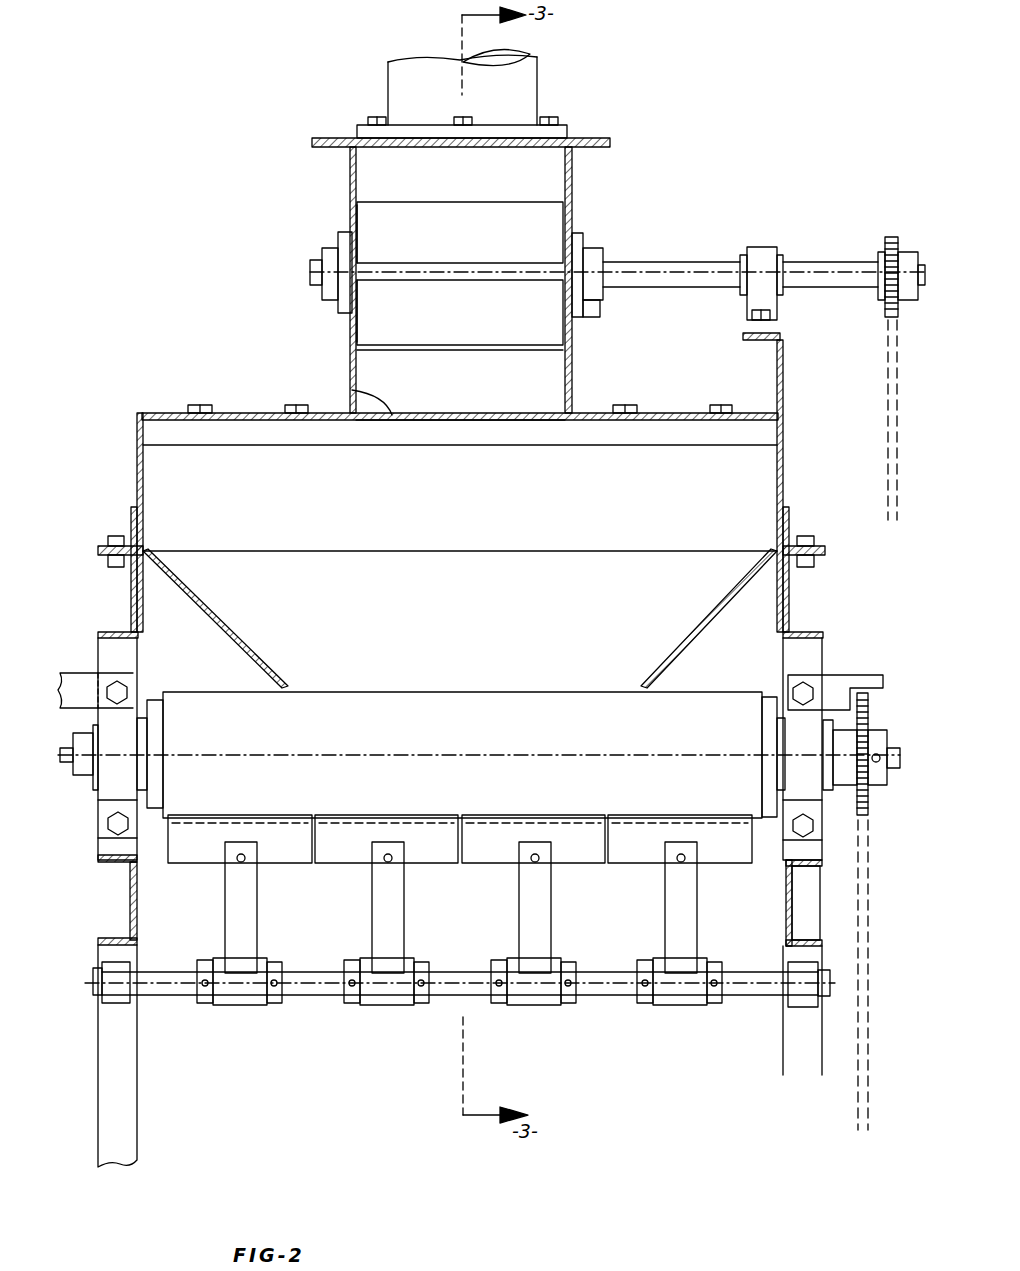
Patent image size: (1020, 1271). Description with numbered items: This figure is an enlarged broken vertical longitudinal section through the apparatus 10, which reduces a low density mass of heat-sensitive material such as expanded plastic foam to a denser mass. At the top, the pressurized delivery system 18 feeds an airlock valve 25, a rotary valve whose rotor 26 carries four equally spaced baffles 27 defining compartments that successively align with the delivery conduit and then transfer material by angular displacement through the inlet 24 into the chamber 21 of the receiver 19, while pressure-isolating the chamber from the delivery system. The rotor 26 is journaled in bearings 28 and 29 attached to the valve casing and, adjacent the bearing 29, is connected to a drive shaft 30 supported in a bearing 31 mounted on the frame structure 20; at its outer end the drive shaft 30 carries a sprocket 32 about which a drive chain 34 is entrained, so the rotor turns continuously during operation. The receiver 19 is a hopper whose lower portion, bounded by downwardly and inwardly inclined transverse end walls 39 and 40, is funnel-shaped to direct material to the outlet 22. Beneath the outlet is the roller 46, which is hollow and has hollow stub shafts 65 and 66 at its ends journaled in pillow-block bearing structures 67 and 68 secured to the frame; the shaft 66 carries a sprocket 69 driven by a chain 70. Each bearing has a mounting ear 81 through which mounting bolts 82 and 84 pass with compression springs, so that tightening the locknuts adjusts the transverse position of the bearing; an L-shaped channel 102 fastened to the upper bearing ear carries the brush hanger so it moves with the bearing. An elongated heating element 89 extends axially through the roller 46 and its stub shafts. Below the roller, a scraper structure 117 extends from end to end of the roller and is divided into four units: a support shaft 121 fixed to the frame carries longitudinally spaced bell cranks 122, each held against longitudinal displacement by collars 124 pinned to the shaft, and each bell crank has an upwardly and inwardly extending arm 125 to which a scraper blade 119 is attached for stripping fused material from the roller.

The apparatus 10 is at (158, 390).
The pressurized delivery system 18 is at (388, 76).
The receiver 19 is at (137, 472).
The frame structure 20 is at (98, 1082).
The chamber 21 is at (140, 506).
The outlet 22 is at (284, 690).
The inlet 24 is at (352, 390).
The airlock valve 25 is at (572, 190).
The rotor 26 is at (540, 268).
The baffles 27 is at (352, 218).
The bearing 28 is at (325, 252).
The bearing 29 is at (585, 317).
The drive shaft 30 is at (658, 268).
The bearing 31 is at (757, 248).
The sprocket 32 is at (888, 240).
The drive chain 34 is at (888, 358).
The transverse end wall 39 is at (218, 628).
The transverse end wall 40 is at (680, 645).
The roller 46 is at (390, 700).
The hollow stub shaft 65 is at (86, 776).
The hollow stub shaft 66 is at (872, 740).
The bearing structure 67 is at (112, 728).
The bearing structure 68 is at (818, 712).
The sprocket 69 is at (864, 806).
The chain 70 is at (868, 926).
The mounting ear 81 is at (106, 856).
The mounting bolt 82 is at (125, 684).
The mounting bolt 84 is at (108, 825).
The heating element 89 is at (64, 753).
The L-shaped channel 102 is at (72, 672).
The scraper structure 117 is at (230, 1008).
The scraper blade 119 is at (284, 862).
The support shaft 121 is at (160, 1000).
The bell crank 122 is at (240, 1006).
The collar 124 is at (205, 960).
The arm 125 is at (225, 886).